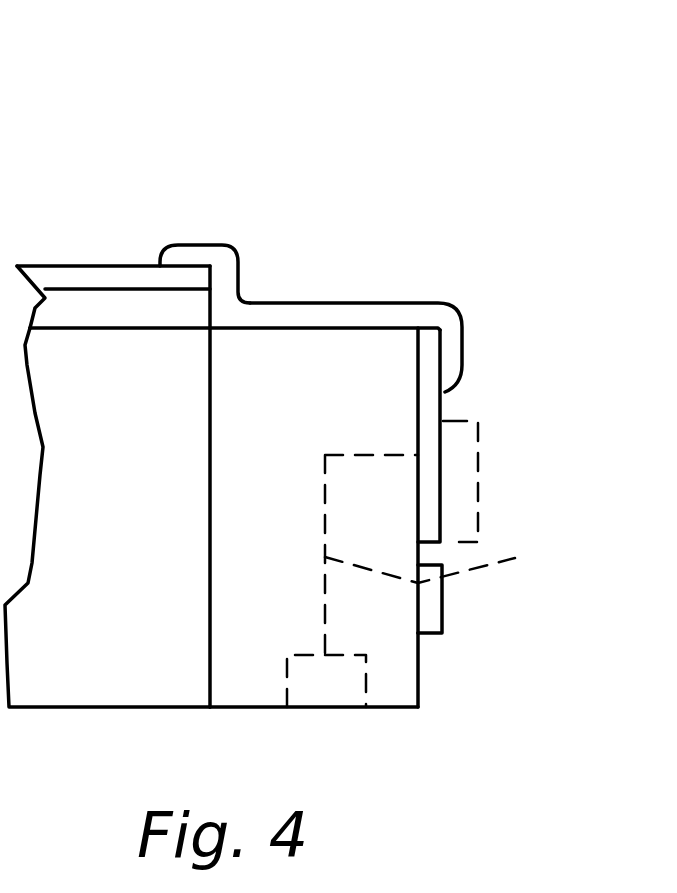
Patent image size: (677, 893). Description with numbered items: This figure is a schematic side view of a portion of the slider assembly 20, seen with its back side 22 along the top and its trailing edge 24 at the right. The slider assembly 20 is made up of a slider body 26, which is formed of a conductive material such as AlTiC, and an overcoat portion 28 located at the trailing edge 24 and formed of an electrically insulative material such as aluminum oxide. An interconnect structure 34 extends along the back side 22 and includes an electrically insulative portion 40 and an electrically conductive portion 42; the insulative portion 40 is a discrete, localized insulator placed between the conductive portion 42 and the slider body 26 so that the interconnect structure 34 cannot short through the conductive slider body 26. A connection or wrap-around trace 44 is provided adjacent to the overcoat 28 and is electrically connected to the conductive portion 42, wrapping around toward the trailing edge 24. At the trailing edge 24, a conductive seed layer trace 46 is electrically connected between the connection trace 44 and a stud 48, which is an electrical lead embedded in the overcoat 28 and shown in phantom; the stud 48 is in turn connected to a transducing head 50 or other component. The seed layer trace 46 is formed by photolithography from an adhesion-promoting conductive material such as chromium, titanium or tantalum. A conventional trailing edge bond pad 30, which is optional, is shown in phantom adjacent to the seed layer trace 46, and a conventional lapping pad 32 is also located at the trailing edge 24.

The slider assembly 20 is at (100, 210).
The back side 22 is at (323, 310).
The trailing edge 24 is at (437, 685).
The slider body 26 is at (165, 600).
The overcoat portion 28 is at (408, 655).
The trailing edge bond pad 30 is at (479, 475).
The lapping pad 32 is at (443, 620).
The interconnect structure 34 is at (66, 300).
The electrically insulative portion 40 is at (170, 311).
The electrically conductive portion 42 is at (193, 283).
The connection trace 44 is at (425, 312).
The seed layer trace 46 is at (428, 410).
The stud 48 is at (443, 562).
The transducing head 50 is at (330, 693).